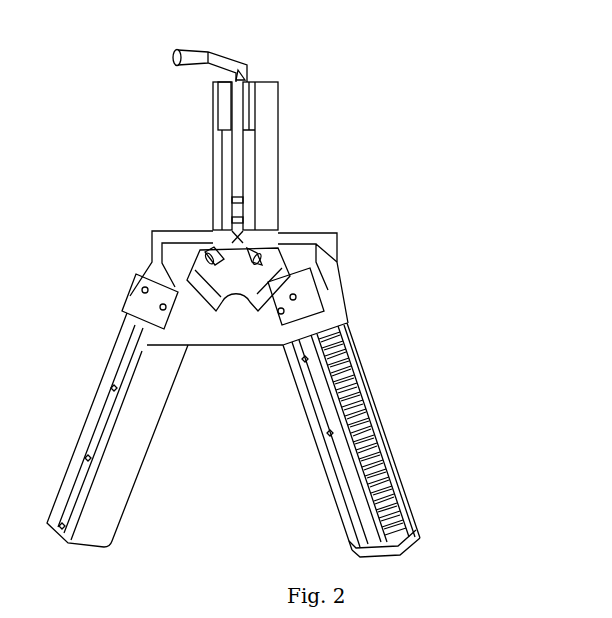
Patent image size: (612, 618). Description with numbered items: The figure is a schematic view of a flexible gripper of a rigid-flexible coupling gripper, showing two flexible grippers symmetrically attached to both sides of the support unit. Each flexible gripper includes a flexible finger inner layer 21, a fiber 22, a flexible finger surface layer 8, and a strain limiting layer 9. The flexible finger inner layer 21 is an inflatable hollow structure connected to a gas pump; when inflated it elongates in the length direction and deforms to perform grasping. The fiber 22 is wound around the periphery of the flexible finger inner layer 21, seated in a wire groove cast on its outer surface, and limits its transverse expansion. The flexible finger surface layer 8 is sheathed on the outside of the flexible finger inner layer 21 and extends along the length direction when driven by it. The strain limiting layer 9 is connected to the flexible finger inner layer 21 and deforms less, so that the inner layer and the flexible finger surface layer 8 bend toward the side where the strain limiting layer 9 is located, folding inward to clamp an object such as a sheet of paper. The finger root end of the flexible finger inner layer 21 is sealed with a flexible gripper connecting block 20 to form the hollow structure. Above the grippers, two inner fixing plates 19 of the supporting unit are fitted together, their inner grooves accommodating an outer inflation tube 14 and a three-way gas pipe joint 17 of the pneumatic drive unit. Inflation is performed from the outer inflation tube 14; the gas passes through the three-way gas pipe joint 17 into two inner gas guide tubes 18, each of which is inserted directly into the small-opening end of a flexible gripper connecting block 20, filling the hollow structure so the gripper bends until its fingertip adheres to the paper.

The flexible finger surface layer 8 is at (115, 370).
The strain limiting layer 9 is at (340, 513).
The outer inflation tube 14 is at (242, 113).
The three-way gas pipe joint 17 is at (253, 230).
The inner gas guide tube 18 is at (277, 273).
The inner fixing plate 19 is at (265, 167).
The flexible gripper connecting block 20 is at (310, 313).
The flexible finger inner layer 21 is at (397, 542).
The fiber 22 is at (355, 382).